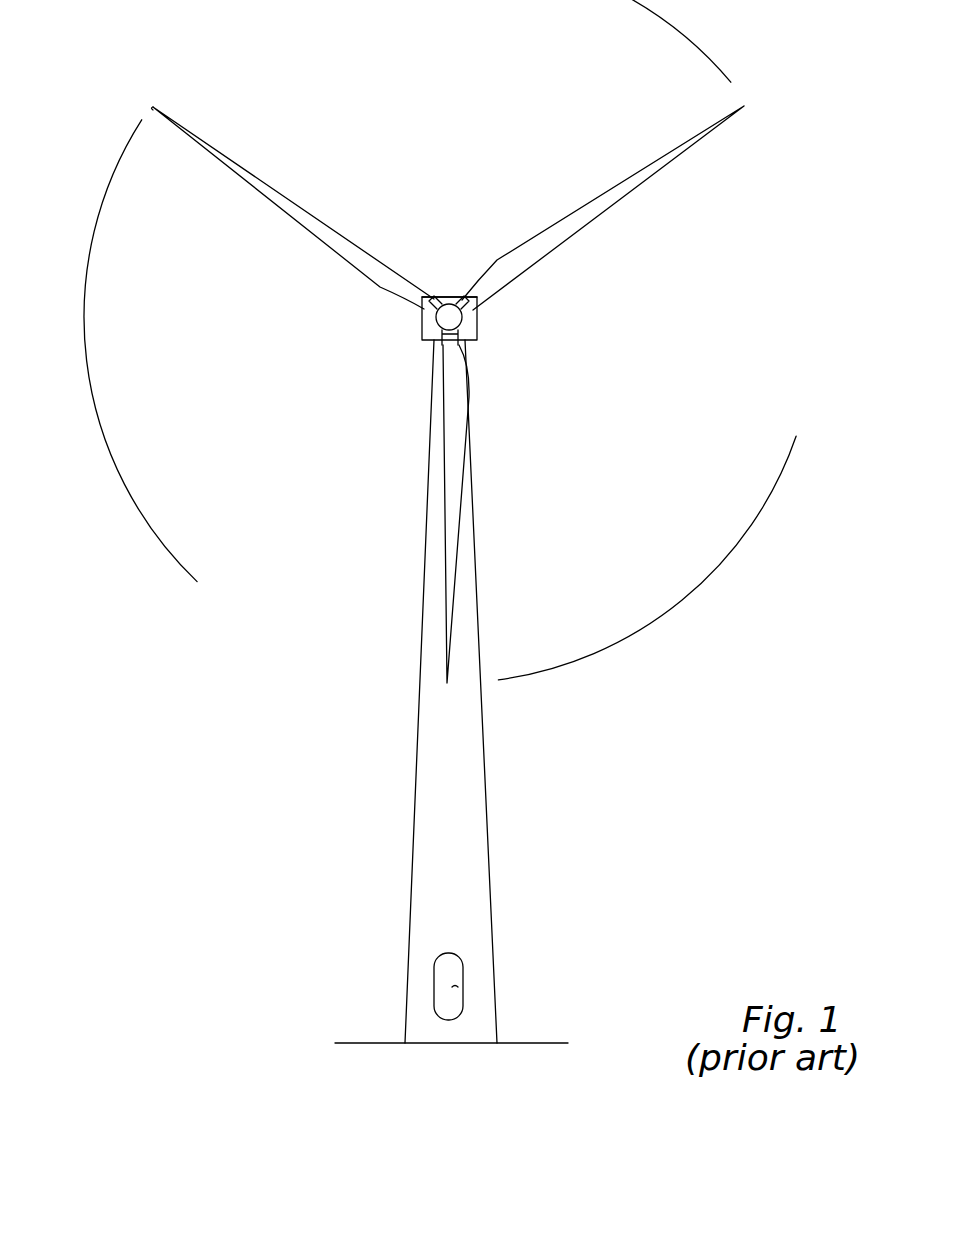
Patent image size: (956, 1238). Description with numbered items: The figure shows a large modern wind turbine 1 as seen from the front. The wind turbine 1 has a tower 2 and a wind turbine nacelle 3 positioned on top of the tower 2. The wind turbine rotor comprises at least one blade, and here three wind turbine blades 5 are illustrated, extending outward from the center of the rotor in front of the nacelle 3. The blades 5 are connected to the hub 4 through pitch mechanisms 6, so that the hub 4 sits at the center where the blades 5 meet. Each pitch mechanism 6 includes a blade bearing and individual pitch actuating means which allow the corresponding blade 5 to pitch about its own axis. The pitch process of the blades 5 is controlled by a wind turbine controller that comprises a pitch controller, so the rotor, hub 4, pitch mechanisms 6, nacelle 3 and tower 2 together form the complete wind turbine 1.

The wind turbine 1 is at (390, 880).
The tower 2 is at (477, 765).
The wind turbine nacelle 3 is at (477, 340).
The hub 4 is at (448, 308).
The wind turbine blades 5 is at (287, 197).
The pitch mechanisms 6 is at (424, 309).